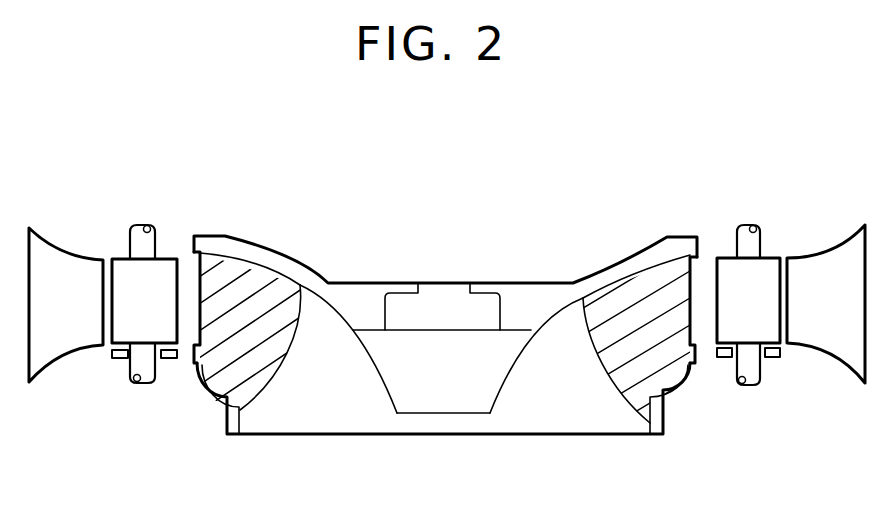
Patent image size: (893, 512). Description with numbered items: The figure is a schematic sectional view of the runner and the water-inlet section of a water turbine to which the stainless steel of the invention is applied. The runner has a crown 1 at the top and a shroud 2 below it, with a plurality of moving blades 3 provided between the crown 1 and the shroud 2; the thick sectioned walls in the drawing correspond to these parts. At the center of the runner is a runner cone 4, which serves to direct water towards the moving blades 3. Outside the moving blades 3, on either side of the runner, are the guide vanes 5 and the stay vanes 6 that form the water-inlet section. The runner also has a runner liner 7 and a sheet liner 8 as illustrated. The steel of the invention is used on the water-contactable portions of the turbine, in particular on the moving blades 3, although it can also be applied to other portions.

The crown 1 is at (532, 290).
The shroud 2 is at (668, 393).
The moving blades 3 is at (693, 322).
The runner cone 4 is at (453, 402).
The guide vanes 5 is at (772, 258).
The stay vanes 6 is at (827, 258).
The runner liner 7 is at (692, 257).
The sheet liner 8 is at (775, 358).